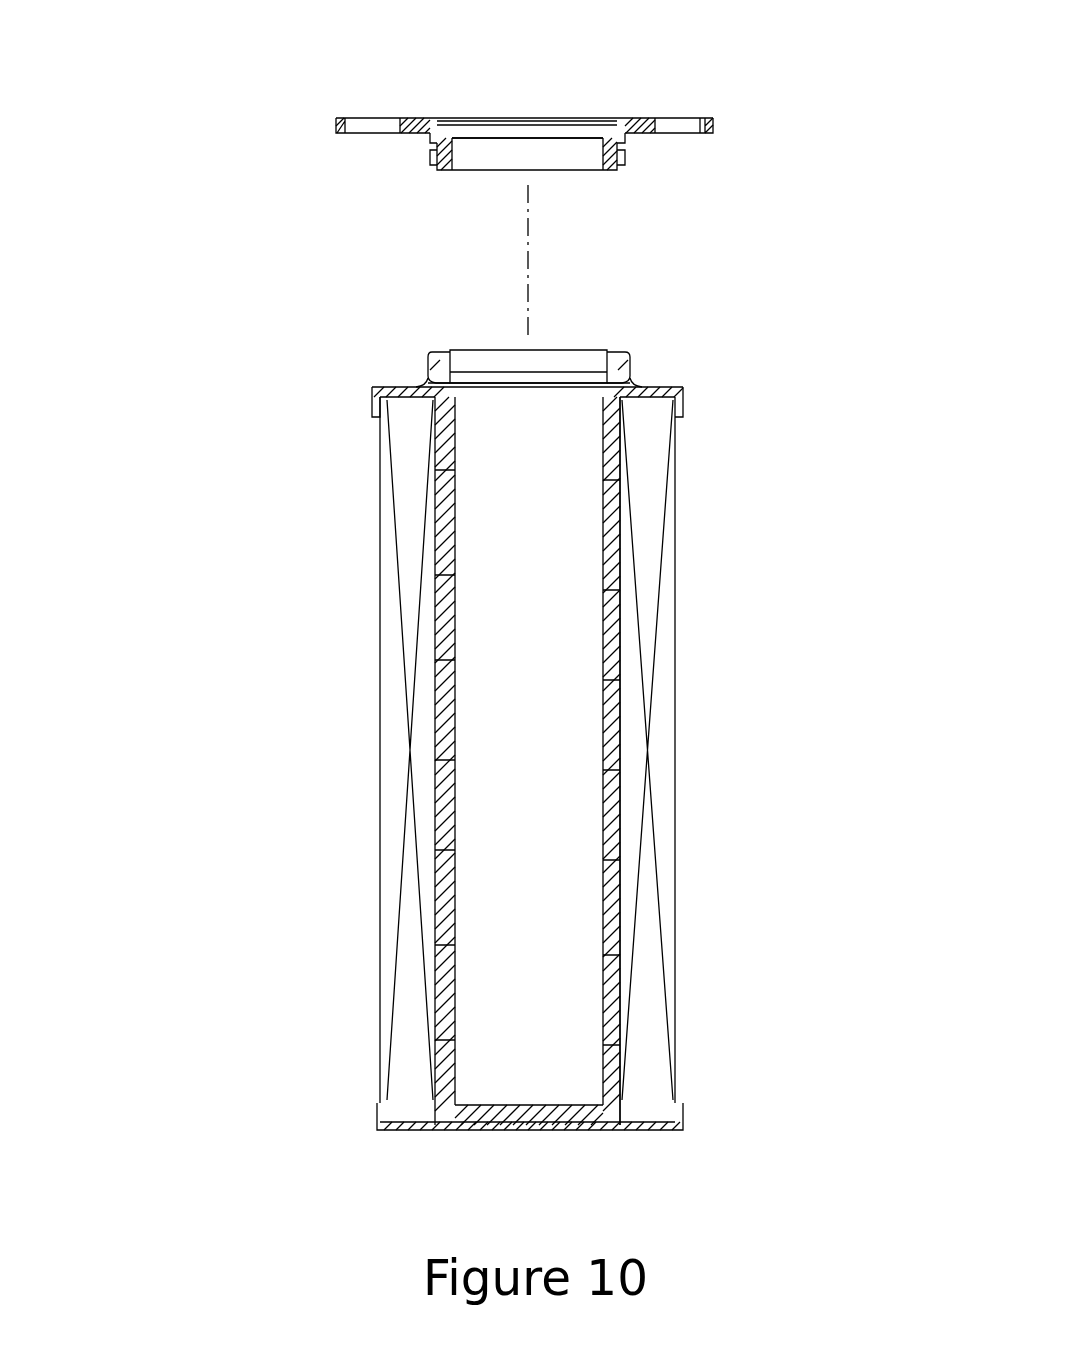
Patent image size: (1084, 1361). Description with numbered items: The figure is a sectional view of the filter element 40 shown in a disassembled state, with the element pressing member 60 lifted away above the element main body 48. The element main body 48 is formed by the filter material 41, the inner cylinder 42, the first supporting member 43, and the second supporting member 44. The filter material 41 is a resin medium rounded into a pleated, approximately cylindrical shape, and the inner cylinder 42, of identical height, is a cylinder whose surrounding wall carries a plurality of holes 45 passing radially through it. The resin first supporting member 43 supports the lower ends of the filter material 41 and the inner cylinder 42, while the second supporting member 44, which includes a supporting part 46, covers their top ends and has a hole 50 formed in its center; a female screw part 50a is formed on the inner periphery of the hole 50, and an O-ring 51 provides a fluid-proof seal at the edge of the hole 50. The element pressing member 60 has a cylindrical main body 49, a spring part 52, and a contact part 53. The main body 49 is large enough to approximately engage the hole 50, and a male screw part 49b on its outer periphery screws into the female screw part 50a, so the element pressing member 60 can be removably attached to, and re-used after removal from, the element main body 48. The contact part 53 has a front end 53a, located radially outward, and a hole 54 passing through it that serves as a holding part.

The filter element 40 is at (682, 570).
The filter material 41 is at (667, 735).
The inner cylinder 42 is at (622, 890).
The first supporting member 43 is at (532, 1132).
The second supporting member 44 is at (663, 386).
The holes 45 is at (457, 570).
The supporting part 46 is at (402, 398).
The element main body 48 is at (372, 810).
The main body 49 is at (455, 155).
The male screw part 49b is at (440, 172).
The hole 50 is at (560, 368).
The female screw part 50a is at (440, 352).
The O-ring 51 is at (598, 127).
The spring part 52 is at (420, 125).
The contact part 53 is at (714, 124).
The front end 53a is at (336, 127).
The hole 54 is at (370, 122).
The element pressing member 60 is at (565, 132).